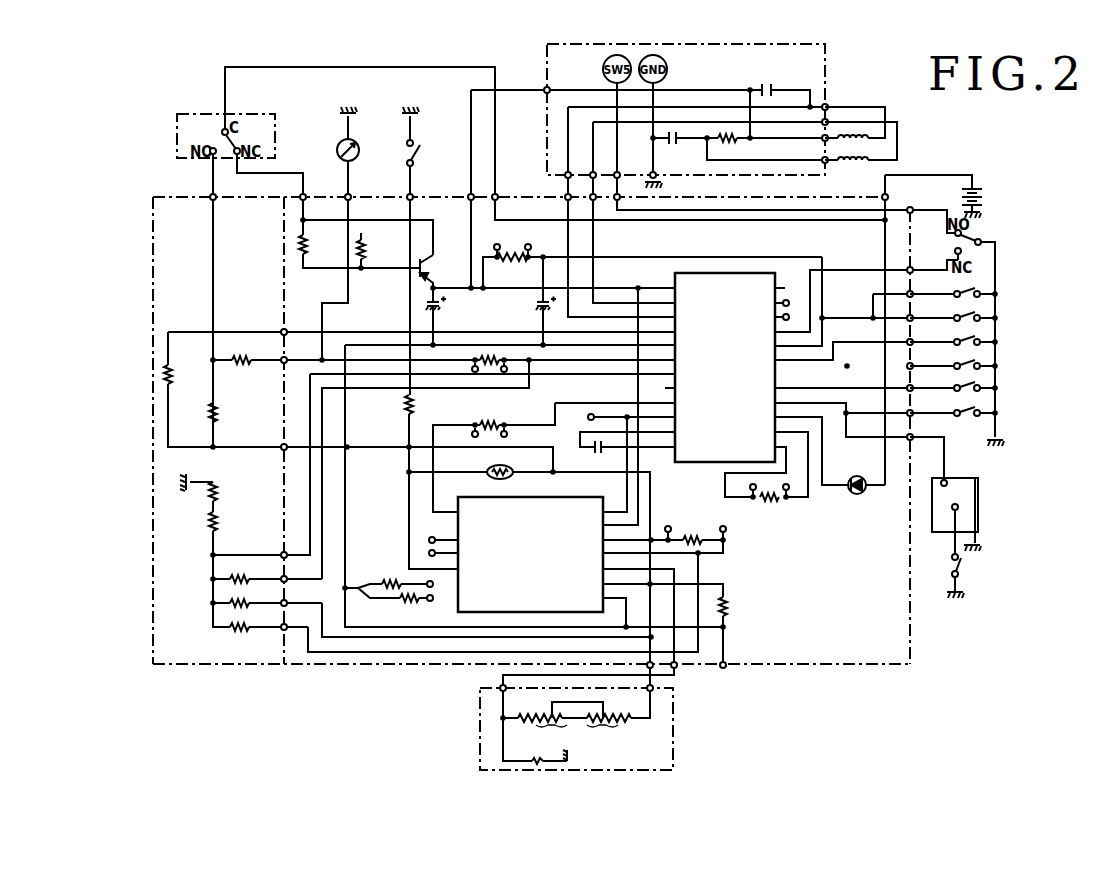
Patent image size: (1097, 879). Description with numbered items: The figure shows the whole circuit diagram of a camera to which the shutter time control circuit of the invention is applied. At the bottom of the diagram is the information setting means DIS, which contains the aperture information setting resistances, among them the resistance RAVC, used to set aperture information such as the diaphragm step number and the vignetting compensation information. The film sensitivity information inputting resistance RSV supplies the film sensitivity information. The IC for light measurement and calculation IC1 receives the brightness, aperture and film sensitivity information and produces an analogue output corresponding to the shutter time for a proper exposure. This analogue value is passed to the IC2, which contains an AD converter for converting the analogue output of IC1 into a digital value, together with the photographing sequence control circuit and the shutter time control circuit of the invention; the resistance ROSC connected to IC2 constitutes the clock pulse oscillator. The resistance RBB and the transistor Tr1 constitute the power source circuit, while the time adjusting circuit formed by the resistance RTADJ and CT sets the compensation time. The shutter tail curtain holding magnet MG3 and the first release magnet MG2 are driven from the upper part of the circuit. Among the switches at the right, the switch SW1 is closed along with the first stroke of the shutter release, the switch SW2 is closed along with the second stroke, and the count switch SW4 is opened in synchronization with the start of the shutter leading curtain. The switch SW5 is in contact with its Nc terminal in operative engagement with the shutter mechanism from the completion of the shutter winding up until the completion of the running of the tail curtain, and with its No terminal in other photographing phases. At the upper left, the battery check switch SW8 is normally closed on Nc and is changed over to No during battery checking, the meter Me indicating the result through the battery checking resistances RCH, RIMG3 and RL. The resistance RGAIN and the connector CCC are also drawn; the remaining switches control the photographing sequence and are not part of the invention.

The battery check switch SW8 is at (237, 137).
The meter Me is at (366, 152).
The transistor Tr1 is at (446, 271).
The resistance RBB is at (380, 250).
The time adjusting resistance RTADJ is at (512, 259).
The time adjusting capacitor CT is at (534, 310).
The switch SW5 is at (966, 238).
The shutter tail curtain holding magnet MG3 is at (858, 134).
The first release magnet MG2 is at (860, 156).
The IC having AD converter, photographing sequence control circuit and shutter time IC2 is at (725, 367).
The IC for light measurement and calculation IC1 is at (530, 554).
The gain adjusting resistor RGAIN is at (697, 530).
The resistance for the clock pulse oscillator ROSC is at (772, 508).
The battery checking resistance RIMG3 is at (163, 375).
The battery checking resistance RCH is at (251, 375).
The battery checking resistance RL is at (225, 416).
The film sensitivity information inputting resistance RSV is at (232, 487).
The count switch SW4 is at (968, 313).
The switch SW2 is at (968, 338).
The switch SW1 is at (968, 362).
The connector CCC is at (945, 507).
The information setting means DIS is at (602, 727).
The aperture information setting resistance RAVC is at (610, 736).